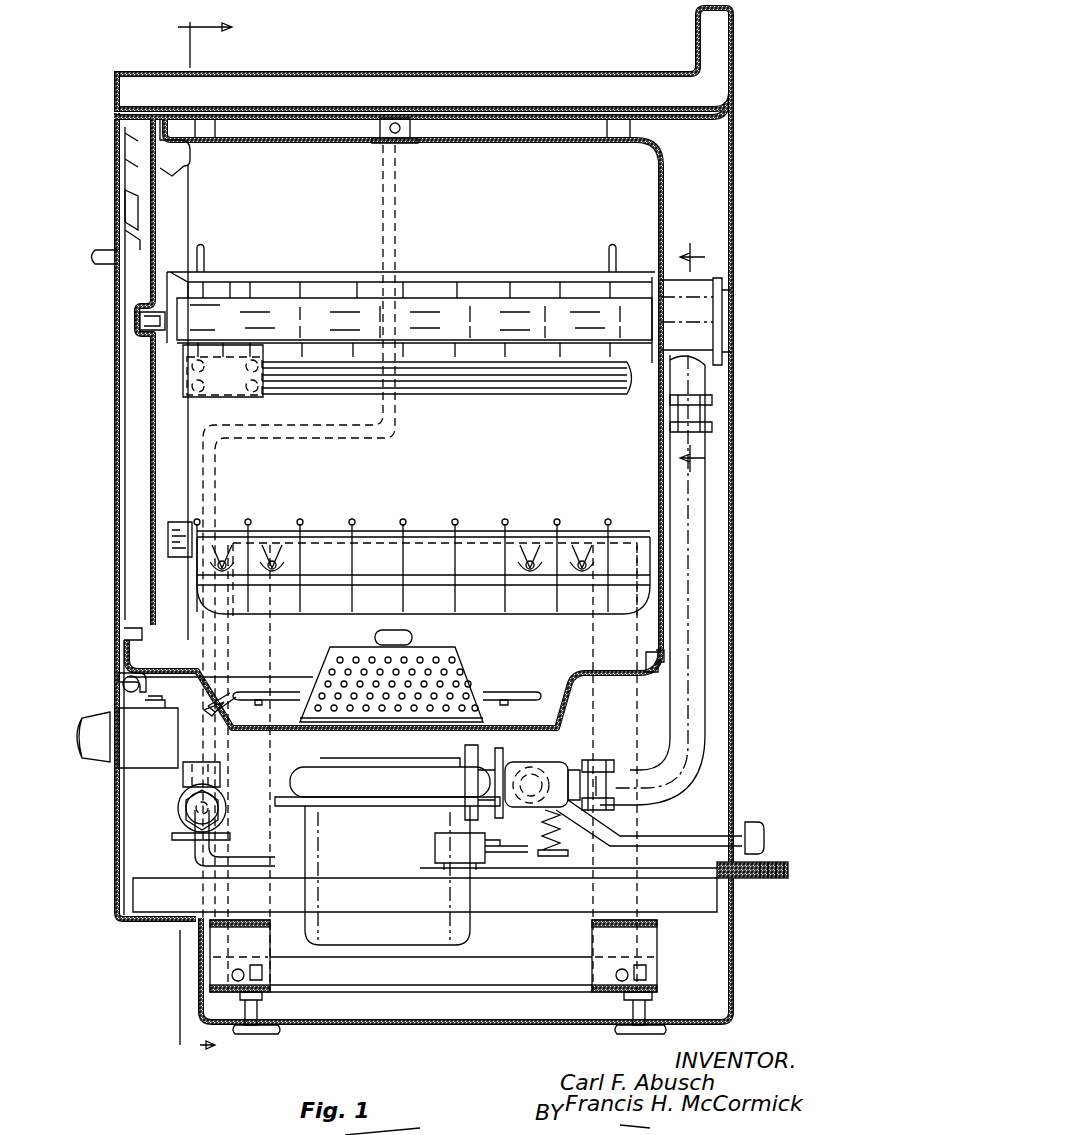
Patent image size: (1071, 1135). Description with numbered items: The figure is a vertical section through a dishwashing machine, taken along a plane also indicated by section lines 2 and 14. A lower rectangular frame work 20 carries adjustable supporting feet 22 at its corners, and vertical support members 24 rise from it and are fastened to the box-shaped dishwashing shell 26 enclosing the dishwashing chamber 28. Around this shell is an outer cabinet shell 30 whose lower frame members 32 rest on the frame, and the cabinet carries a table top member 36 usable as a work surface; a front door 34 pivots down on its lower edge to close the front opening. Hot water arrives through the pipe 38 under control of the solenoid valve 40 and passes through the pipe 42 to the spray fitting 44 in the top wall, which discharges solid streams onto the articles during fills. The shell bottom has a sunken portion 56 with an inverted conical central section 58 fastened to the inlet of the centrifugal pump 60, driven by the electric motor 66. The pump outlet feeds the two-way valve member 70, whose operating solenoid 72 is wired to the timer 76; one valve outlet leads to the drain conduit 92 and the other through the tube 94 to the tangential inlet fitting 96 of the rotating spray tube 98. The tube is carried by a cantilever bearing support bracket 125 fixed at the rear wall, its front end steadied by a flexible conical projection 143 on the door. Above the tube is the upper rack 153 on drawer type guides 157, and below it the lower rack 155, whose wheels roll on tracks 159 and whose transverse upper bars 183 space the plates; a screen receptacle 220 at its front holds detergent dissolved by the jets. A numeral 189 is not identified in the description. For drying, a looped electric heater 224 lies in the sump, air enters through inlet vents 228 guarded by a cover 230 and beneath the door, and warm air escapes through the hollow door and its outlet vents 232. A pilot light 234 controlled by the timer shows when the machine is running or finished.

The section line 2- 2 is at (190, 539).
The section line 14- 14 is at (690, 359).
The lower rectangular frame work 20 is at (445, 985).
The adjustable supporting feet 22 is at (256, 1034).
The vertical support members 24 is at (615, 812).
The dishwashing shell 26 is at (668, 185).
The dishwashing chamber 28 is at (462, 452).
The outer cabinet shell 30 is at (734, 497).
The frame members 32 is at (495, 918).
The front door 34 is at (115, 445).
The table top member 36 is at (512, 70).
The pipe 38 is at (752, 880).
The solenoid valve 40 is at (180, 812).
The pipe 42 is at (262, 440).
The spray fitting 44 is at (380, 143).
The sunken portion 56 is at (560, 705).
The inverted conical shaped central section 58 is at (478, 752).
The centrifugal pump 60 is at (300, 785).
The electric motor 66 is at (387, 875).
The two-way valve member 70 is at (555, 765).
The operating solenoid 72 is at (435, 848).
The timer 76 is at (120, 770).
The drain conduit 92 is at (748, 825).
The tube 94 is at (700, 700).
The tangential inlet fitting 96 is at (705, 320).
The spray tube 98 is at (490, 300).
The bearing support bracket 125 is at (321, 272).
The flexible conical projection 143 is at (140, 322).
The upper rack 153 is at (603, 272).
The lower rack 155 is at (522, 530).
The drawer type guides 157 is at (632, 392).
The tracks 159 is at (428, 575).
The transverse upper bars 183 is at (355, 520).
The strainer 189 is at (336, 647).
The receptacle 220 is at (168, 540).
The electric heater 224 is at (490, 690).
The inlet vents 228 is at (668, 663).
The cover 230 is at (648, 664).
The outlet vents 232 is at (117, 172).
The pilot light 234 is at (124, 686).